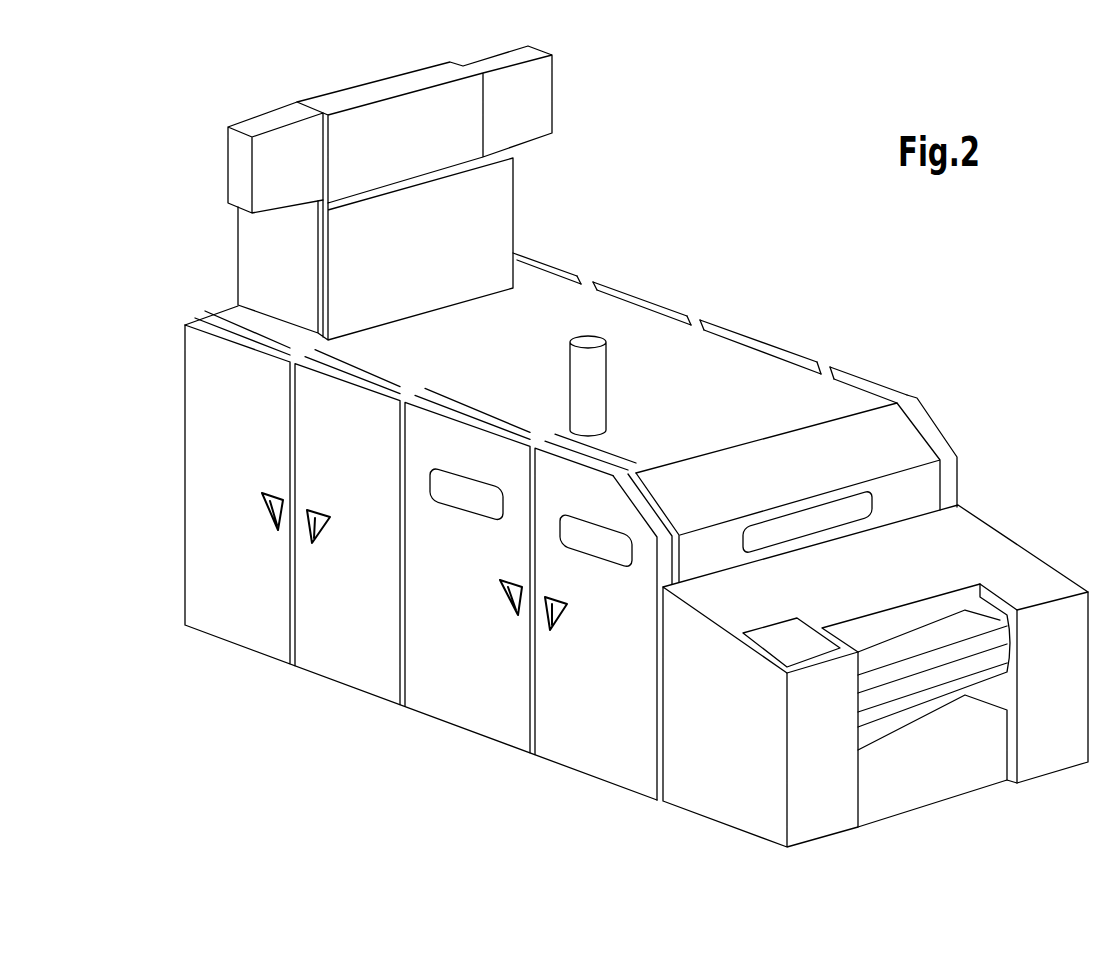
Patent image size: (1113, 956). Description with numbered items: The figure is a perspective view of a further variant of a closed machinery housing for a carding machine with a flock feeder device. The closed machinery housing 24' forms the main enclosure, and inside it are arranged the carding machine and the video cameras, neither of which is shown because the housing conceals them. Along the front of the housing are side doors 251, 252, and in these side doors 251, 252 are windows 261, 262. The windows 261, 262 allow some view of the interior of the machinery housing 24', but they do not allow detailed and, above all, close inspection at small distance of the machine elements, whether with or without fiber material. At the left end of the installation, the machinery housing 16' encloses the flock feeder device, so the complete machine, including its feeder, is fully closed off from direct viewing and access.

The machinery housing 16' is at (597, 446).
The closed machinery housing 24' is at (710, 328).
The side door 251 is at (480, 718).
The side door 252 is at (625, 760).
The window 261 is at (467, 497).
The window 262 is at (612, 553).